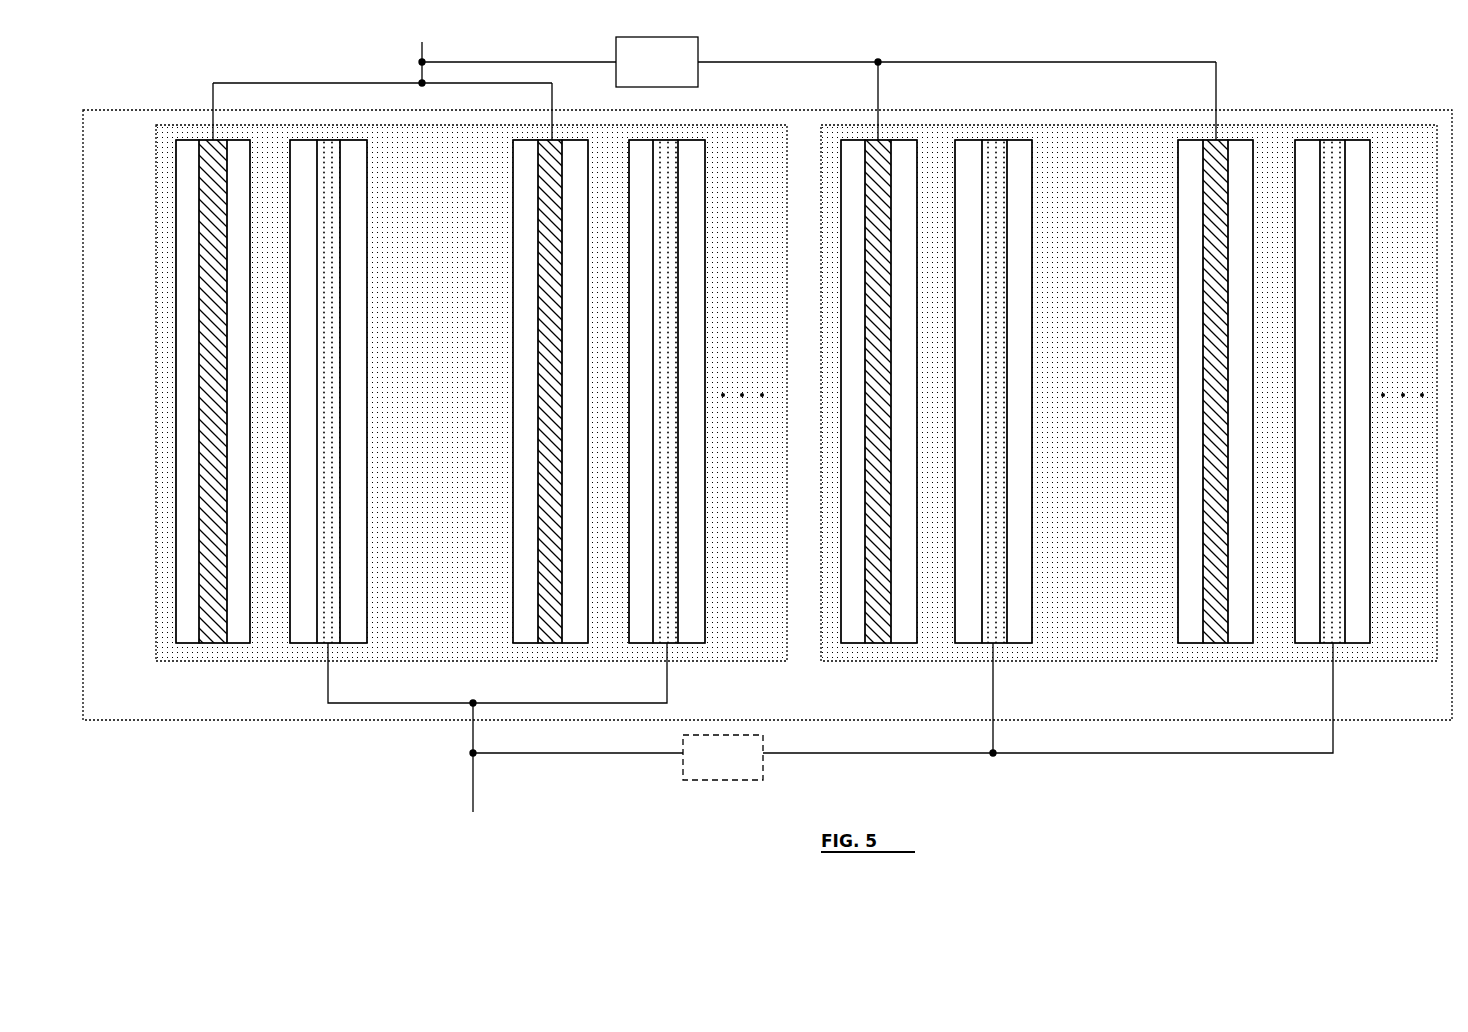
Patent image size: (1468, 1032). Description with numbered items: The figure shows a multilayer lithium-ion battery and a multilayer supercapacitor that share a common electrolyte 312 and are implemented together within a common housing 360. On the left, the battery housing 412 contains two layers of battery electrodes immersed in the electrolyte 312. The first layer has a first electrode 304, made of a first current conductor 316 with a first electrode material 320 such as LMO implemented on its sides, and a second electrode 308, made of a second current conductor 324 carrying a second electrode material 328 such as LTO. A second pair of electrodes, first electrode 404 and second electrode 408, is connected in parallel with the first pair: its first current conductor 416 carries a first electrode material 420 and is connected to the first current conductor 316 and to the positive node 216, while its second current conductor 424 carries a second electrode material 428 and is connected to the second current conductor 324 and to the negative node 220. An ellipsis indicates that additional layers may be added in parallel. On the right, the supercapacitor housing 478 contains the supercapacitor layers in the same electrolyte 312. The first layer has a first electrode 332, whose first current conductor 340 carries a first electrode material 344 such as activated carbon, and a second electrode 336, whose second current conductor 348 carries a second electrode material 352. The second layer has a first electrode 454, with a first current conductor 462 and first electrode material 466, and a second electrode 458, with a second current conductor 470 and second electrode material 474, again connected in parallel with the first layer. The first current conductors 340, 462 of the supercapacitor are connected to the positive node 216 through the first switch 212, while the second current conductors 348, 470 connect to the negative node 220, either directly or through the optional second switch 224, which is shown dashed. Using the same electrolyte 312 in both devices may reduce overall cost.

The first switch 212 is at (660, 37).
The positive node 216 is at (422, 42).
The negative node 220 is at (471, 793).
The second switch 224 is at (731, 781).
The first electrode 304 is at (171, 347).
The second electrode 308 is at (361, 347).
The electrolyte 312 is at (774, 379).
The first current conductor 316 is at (207, 328).
The first electrode material 320 is at (187, 275).
The second current conductor 324 is at (330, 313).
The second electrode material 328 is at (307, 275).
The first electrode 332 is at (826, 358).
The second electrode 336 is at (1027, 361).
The first current conductor 340 is at (875, 325).
The first electrode material 344 is at (850, 275).
The second current conductor 348 is at (997, 312).
The second electrode material 352 is at (972, 273).
The common housing 360 is at (1414, 110).
The first electrode 404 is at (505, 332).
The second electrode 408 is at (699, 337).
The battery housing 412 is at (163, 125).
The first current conductor 416 is at (547, 332).
The first electrode material 420 is at (523, 278).
The second current conductor 424 is at (670, 313).
The second electrode material 428 is at (643, 275).
The first electrode 454 is at (1171, 359).
The second electrode 458 is at (1365, 362).
The first current conductor 462 is at (1210, 330).
The first electrode material 466 is at (1188, 277).
The second current conductor 470 is at (1337, 312).
The second electrode material 474 is at (1310, 275).
The supercapacitor housing 478 is at (1113, 125).